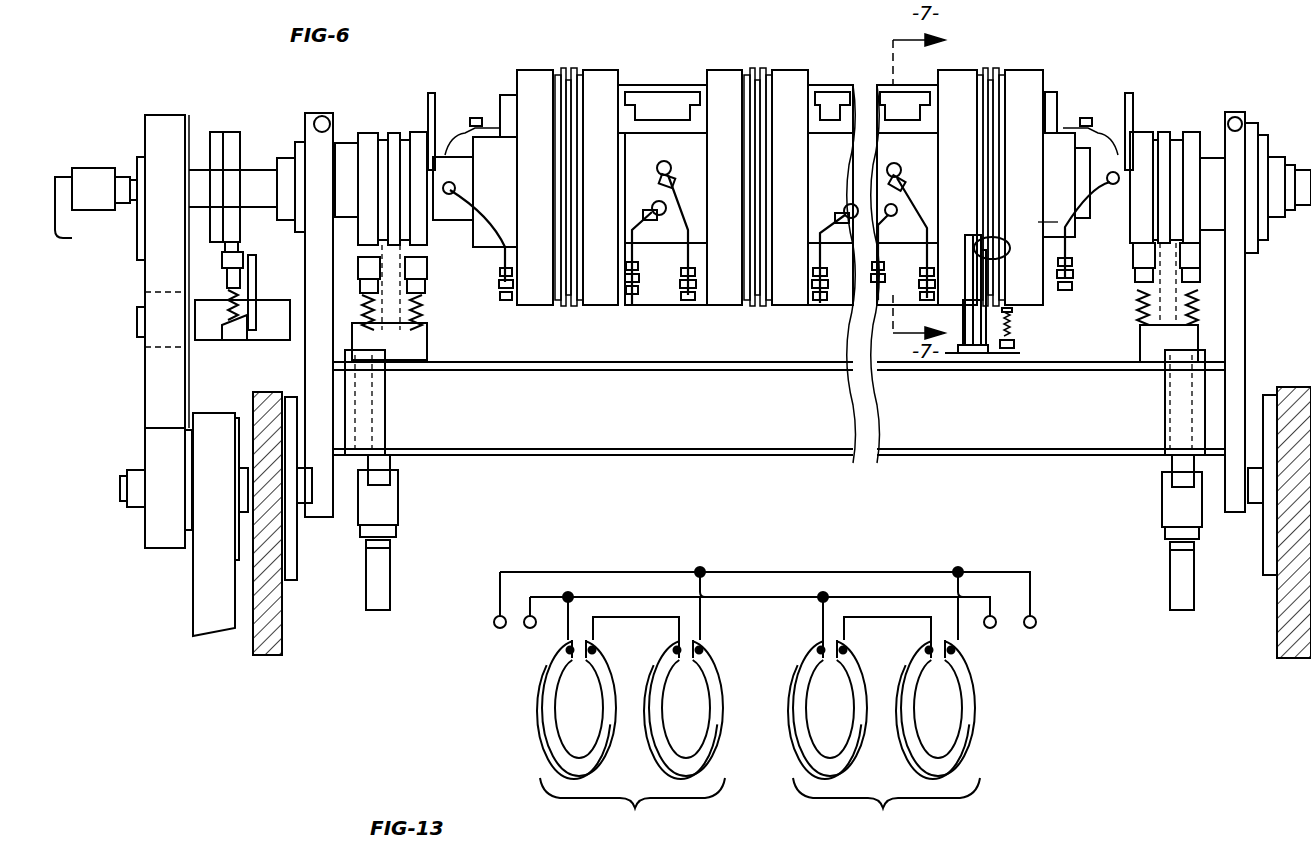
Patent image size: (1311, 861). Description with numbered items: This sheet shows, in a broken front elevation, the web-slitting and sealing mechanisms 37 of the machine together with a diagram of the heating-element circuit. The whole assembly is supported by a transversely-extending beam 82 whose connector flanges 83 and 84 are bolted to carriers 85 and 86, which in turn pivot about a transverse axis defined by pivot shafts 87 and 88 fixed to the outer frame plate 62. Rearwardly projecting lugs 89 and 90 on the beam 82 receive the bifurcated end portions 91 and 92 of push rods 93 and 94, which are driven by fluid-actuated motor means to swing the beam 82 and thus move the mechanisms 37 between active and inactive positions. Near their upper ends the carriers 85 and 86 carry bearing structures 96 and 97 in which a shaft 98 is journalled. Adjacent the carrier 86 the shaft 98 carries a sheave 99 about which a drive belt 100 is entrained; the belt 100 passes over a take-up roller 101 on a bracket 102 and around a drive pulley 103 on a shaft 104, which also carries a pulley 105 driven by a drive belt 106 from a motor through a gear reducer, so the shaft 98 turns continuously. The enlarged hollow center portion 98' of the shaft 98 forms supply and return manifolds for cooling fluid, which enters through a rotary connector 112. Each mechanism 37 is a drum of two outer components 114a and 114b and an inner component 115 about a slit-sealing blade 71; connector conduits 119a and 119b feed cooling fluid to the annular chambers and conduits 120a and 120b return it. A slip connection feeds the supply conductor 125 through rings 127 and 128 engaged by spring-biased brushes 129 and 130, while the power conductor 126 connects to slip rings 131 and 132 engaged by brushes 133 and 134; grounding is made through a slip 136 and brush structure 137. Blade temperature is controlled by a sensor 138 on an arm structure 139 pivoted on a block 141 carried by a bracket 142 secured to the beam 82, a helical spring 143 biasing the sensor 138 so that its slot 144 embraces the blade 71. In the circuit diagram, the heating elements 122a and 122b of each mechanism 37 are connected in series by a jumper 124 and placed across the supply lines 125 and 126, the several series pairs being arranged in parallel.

In FIG. 6, the web-slitting and sealing mechanism 37 is at (527, 70).
In FIG. 13, the web-slitting and sealing mechanism 37 is at (760, 803).
In FIG. 6, the outer frame plate 62 is at (275, 650).
In FIG. 6, the slit-sealing blade 71 is at (563, 68).
In FIG. 6, the beam 82 is at (735, 447).
In FIG. 6, the connector flange 83 is at (1205, 410).
In FIG. 6, the connector flange 84 is at (350, 433).
In FIG. 6, the carrier 85 is at (1248, 358).
In FIG. 6, the carrier 86 is at (314, 377).
In FIG. 6, the pivot shaft 87 is at (1255, 500).
In FIG. 6, the pivot shaft 88 is at (300, 505).
In FIG. 6, the lug 89 is at (1172, 462).
In FIG. 6, the lug 90 is at (380, 465).
In FIG. 6, the bifurcated end portion 91 is at (1160, 520).
In FIG. 6, the bifurcated end portion 92 is at (395, 517).
In FIG. 6, the push rod 93 is at (1170, 580).
In FIG. 6, the push rod 94 is at (385, 588).
In FIG. 6, the bearing structure 96 is at (1282, 157).
In FIG. 6, the bearing structure 97 is at (303, 135).
In FIG. 6, the shaft 98 is at (233, 155).
In FIG. 6, the center portion of the shaft 98' is at (761, 180).
In FIG. 6, the pulley wheel or sheave 99 is at (142, 121).
In FIG. 6, the drive belt 100 is at (152, 395).
In FIG. 6, the take-up roller 101 is at (140, 348).
In FIG. 6, the bracket 102 is at (212, 340).
In FIG. 6, the drive pulley 103 is at (130, 480).
In FIG. 6, the shaft 104 is at (128, 499).
In FIG. 6, the pulley 105 is at (185, 423).
In FIG. 6, the drive belt 106 is at (218, 412).
In FIG. 6, the connector 112 is at (100, 168).
In FIG. 6, the outer component 114a is at (533, 300).
In FIG. 6, the outer component 114b is at (608, 305).
In FIG. 6, the inner component 115 is at (568, 305).
In FIG. 6, the connector conduit 119a is at (500, 238).
In FIG. 6, the connector conduit 119b is at (650, 244).
In FIG. 6, the conduit 120a is at (505, 270).
In FIG. 6, the conduit 120b is at (660, 300).
In FIG. 13, the heating element 122a is at (540, 700).
In FIG. 13, the heating element 122b is at (718, 680).
In FIG. 13, the jumper 124 is at (612, 628).
In FIG. 6, the supply conductor 125 is at (452, 115).
In FIG. 13, the supply conductor 125 is at (752, 603).
In FIG. 13, the power conductor 126 is at (811, 556).
In FIG. 6, the ring 127 is at (430, 255).
In FIG. 6, the ring 128 is at (1140, 262).
In FIG. 6, the spring-biased brush 129 is at (430, 298).
In FIG. 6, the spring-biased brush 130 is at (1133, 285).
In FIG. 6, the slip ring 131 is at (368, 133).
In FIG. 6, the slip ring 132 is at (1187, 134).
In FIG. 6, the spring-biased brush 133 is at (360, 288).
In FIG. 6, the spring-biased brush 134 is at (1200, 290).
In FIG. 6, the slip 136 is at (232, 135).
In FIG. 6, the spring-biased brush structure 137 is at (230, 283).
In FIG. 6, the sensor 138 is at (975, 262).
In FIG. 6, the arm structure 139 is at (978, 330).
In FIG. 6, the block 141 is at (985, 353).
In FIG. 6, the plate or bracket 142 is at (1020, 353).
In FIG. 6, the helical spring 143 is at (1020, 340).
In FIG. 6, the slot 144 is at (1030, 224).